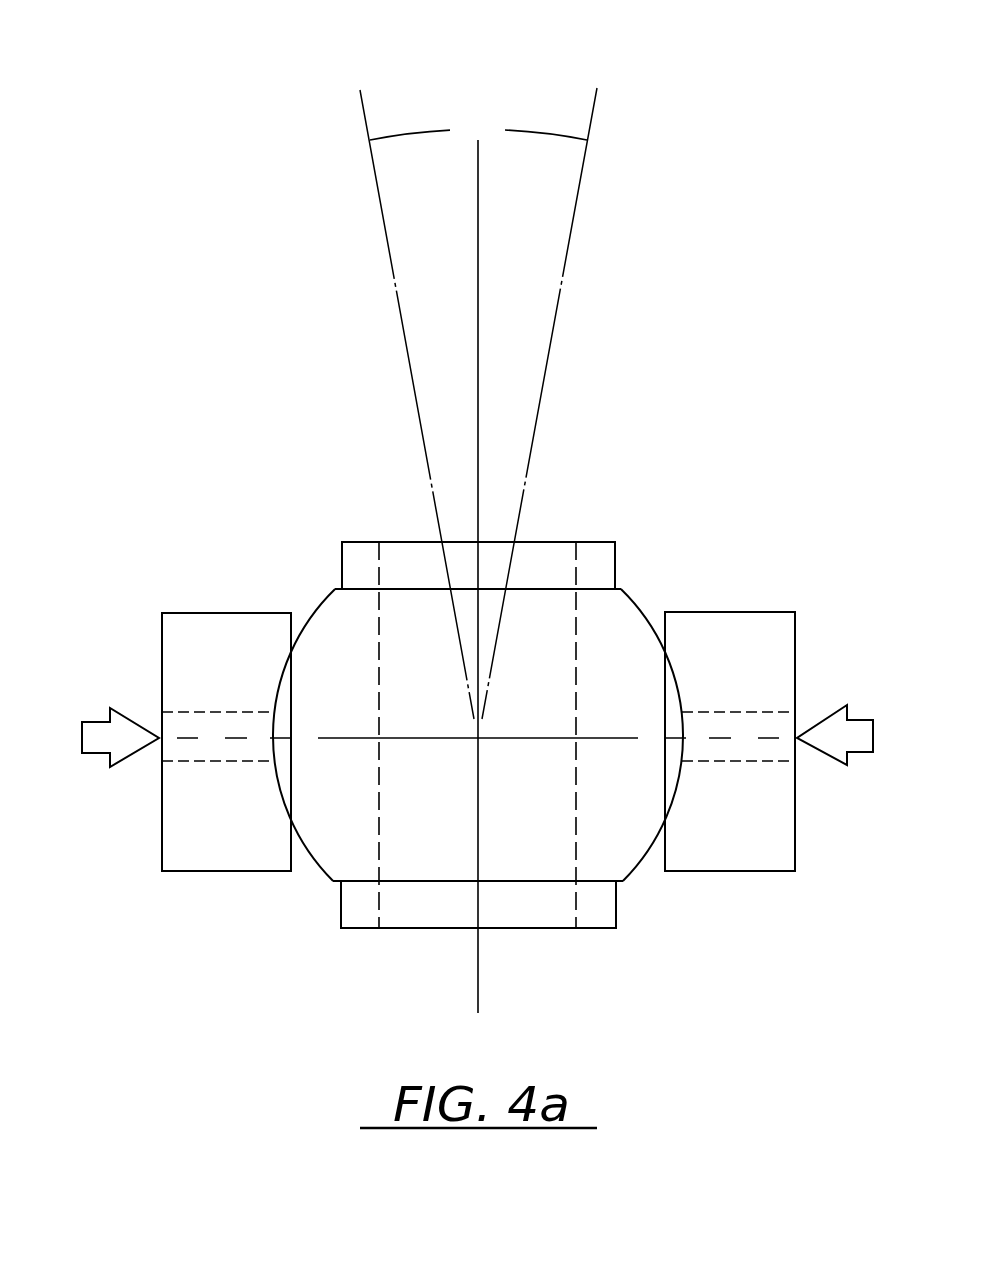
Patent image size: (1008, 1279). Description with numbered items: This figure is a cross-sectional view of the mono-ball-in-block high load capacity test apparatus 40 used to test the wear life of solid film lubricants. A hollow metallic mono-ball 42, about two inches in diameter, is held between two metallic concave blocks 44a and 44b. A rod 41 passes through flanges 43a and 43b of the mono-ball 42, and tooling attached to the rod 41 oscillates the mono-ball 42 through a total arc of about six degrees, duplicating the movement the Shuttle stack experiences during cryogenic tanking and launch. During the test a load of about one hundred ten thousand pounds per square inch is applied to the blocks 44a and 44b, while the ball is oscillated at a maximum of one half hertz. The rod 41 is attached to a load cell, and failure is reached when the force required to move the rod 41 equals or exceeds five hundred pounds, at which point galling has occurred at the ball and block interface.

The ball member 40 is at (478, 705).
The rod 41 is at (478, 257).
The mono-ball 42 is at (637, 603).
The flange 43a is at (620, 540).
The flange 43b is at (613, 928).
The concave block 44a is at (208, 622).
The concave block 44b is at (793, 612).